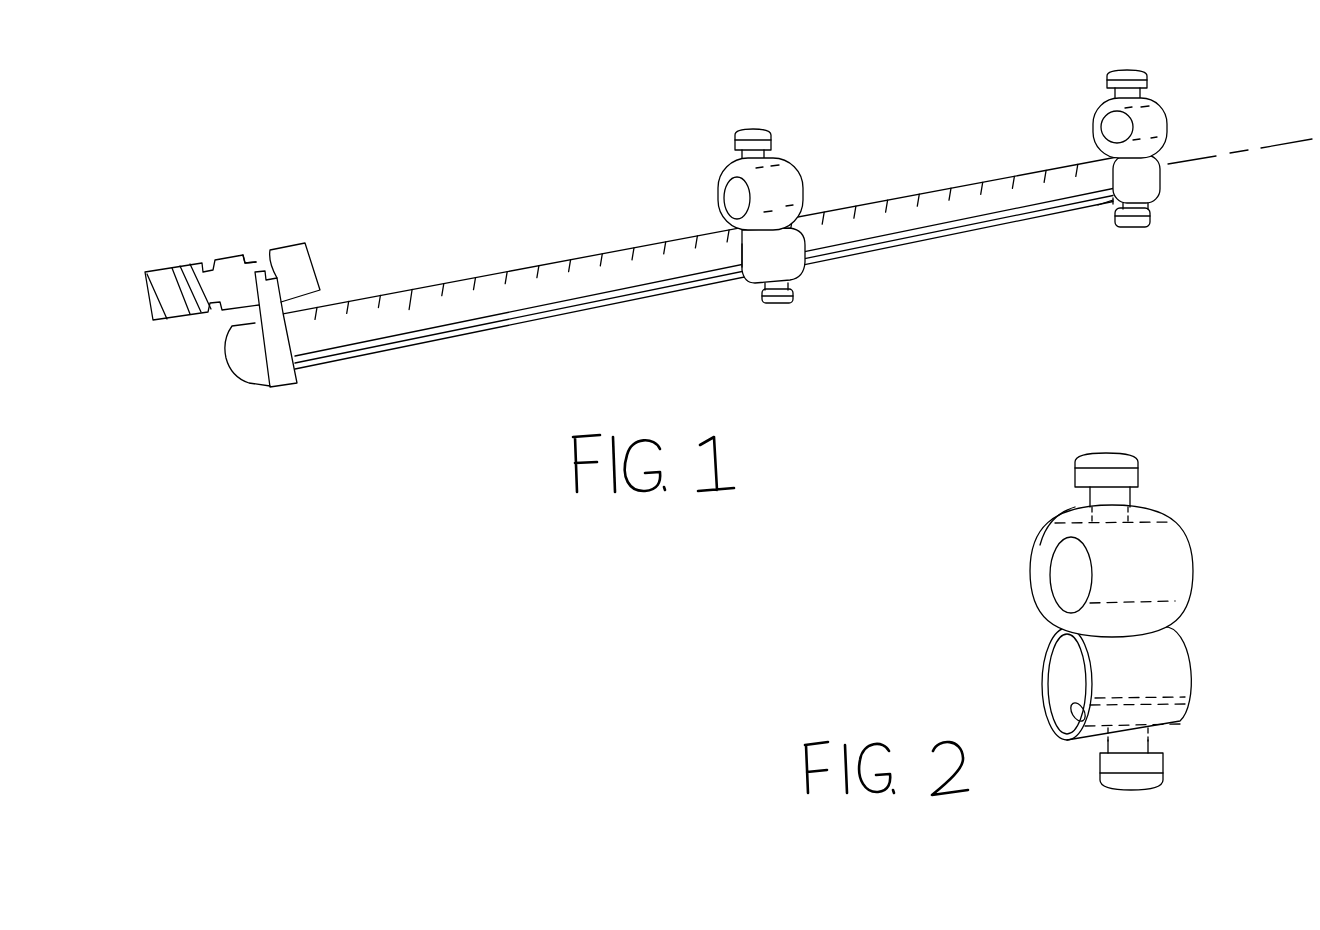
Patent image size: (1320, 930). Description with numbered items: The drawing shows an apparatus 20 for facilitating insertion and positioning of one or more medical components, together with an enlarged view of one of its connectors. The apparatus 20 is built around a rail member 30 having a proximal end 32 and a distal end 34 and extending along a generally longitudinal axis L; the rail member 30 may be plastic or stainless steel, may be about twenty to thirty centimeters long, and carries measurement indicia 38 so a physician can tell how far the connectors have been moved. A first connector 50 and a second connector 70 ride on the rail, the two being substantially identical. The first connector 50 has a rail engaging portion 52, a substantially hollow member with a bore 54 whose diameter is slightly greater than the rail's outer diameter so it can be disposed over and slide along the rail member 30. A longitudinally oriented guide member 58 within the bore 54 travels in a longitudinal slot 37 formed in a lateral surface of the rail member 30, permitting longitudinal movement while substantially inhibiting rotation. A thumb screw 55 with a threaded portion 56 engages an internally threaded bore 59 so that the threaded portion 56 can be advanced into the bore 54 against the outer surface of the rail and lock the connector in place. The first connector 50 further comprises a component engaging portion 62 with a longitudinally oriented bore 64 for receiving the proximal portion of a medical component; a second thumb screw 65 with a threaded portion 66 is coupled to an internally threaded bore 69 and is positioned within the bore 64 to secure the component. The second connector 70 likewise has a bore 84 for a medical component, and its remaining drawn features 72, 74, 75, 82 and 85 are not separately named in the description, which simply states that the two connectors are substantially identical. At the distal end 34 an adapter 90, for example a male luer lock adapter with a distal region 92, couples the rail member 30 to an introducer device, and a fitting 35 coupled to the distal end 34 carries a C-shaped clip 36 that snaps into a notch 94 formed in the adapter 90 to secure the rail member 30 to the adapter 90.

In FIG. 1, the apparatus 20 is at (487, 187).
In FIG. 1, the rail member 30 is at (608, 254).
In FIG. 1, the proximal end 32 is at (1110, 230).
In FIG. 1, the distal end 34 is at (263, 398).
In FIG. 1, the fitting 35 is at (285, 385).
In FIG. 1, the C-shaped clip 36 is at (279, 249).
In FIG. 1, the slot 37 is at (600, 297).
In FIG. 1, the measurement indicia 38 is at (427, 292).
In FIG. 1, the first connector 50 is at (722, 165).
In FIG. 2, the first connector 50 is at (1002, 549).
In FIG. 1, the rail engaging portion 52 is at (800, 264).
In FIG. 2, the rail engaging portion 52 is at (1172, 657).
In FIG. 1, the bore 54 is at (740, 280).
In FIG. 2, the bore 54 is at (1070, 684).
In FIG. 1, the thumb screw 55 is at (776, 300).
In FIG. 2, the thumb screw 55 is at (1148, 783).
In FIG. 2, the threaded portion 56 is at (1140, 750).
In FIG. 2, the guide member 58 is at (1077, 722).
In FIG. 2, the bore 59 is at (1195, 735).
In FIG. 1, the component engaging portion 62 is at (780, 160).
In FIG. 2, the component engaging portion 62 is at (1175, 547).
In FIG. 1, the bore 64 is at (735, 197).
In FIG. 2, the bore 64 is at (1068, 590).
In FIG. 1, the thumb screw 65 is at (752, 128).
In FIG. 2, the thumb screw 65 is at (1135, 460).
In FIG. 2, the threaded portion 66 is at (1132, 500).
In FIG. 2, the bore 69 is at (1060, 512).
In FIG. 1, the second connector 70 is at (1092, 106).
In FIG. 1, the lower body of second slider 72 is at (1155, 196).
In FIG. 1, the ruler end face 74 is at (1100, 206).
In FIG. 1, the lower thumb screw of second slider 75 is at (1135, 228).
In FIG. 1, the upper body of second slider 82 is at (1146, 100).
In FIG. 1, the bore 84 is at (1102, 128).
In FIG. 1, the upper thumb screw of second slider 85 is at (1125, 76).
In FIG. 1, the adapter 90 is at (170, 263).
In FIG. 1, the distal region 92 is at (163, 320).
In FIG. 1, the notch 94 is at (256, 258).
In FIG. 1, the longitudinal axis L is at (1268, 156).